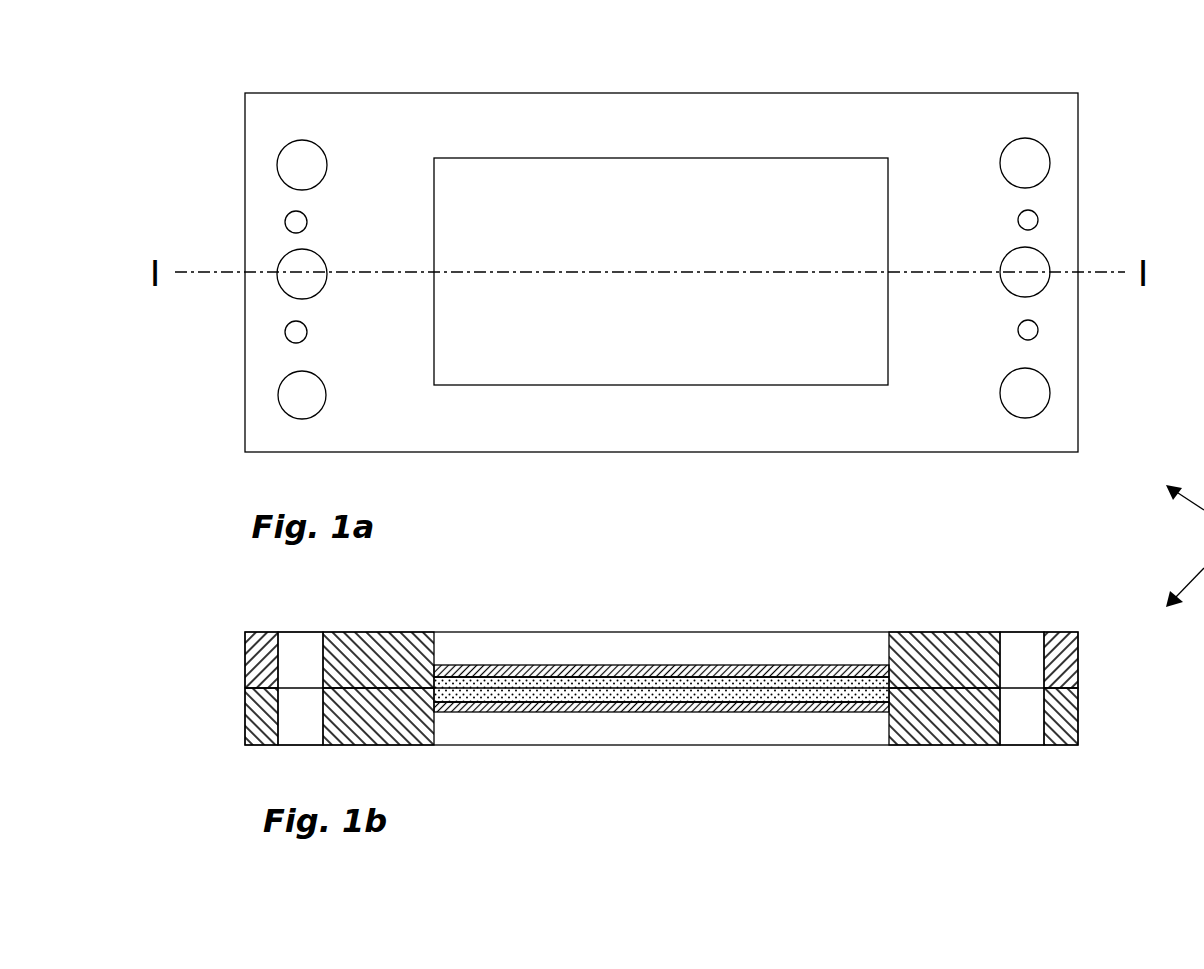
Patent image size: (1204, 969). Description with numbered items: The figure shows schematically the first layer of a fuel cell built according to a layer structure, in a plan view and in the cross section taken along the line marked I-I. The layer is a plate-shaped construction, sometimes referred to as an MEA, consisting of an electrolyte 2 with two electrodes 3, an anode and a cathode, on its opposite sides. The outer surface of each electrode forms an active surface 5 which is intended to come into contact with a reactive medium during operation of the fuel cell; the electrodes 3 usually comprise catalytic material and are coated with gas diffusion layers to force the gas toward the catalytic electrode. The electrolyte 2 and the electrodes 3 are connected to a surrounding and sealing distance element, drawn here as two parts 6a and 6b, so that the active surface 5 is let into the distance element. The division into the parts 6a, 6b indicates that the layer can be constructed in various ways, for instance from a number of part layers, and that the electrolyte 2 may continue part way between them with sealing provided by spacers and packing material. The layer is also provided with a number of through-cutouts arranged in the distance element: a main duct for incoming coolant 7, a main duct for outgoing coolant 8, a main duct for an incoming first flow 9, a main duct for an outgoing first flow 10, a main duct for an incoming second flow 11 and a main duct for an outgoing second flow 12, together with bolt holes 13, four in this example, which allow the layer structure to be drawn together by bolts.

In FIG. 1B, the electrolyte 2 is at (779, 688).
In FIG. 1B, the electrodes 3 is at (635, 678).
In FIG. 1A, the active surface 5 is at (543, 182).
In FIG. 1B, the active surface 5 is at (513, 665).
In FIG. 1B, the distance element part 6a is at (376, 645).
In FIG. 1B, the distance element part 6b is at (963, 745).
In FIG. 1A, the main duct for incoming coolant 7 is at (1033, 158).
In FIG. 1A, the main duct for outgoing coolant 8 is at (290, 395).
In FIG. 1A, the main duct for an incoming first flow 9 is at (1032, 268).
In FIG. 1B, the main duct for an incoming first flow 9 is at (1022, 643).
In FIG. 1A, the main duct for an outgoing first flow 10 is at (300, 278).
In FIG. 1B, the main duct for an outgoing first flow 10 is at (290, 712).
In FIG. 1A, the main duct for an incoming second flow 11 is at (1033, 393).
In FIG. 1A, the main duct for an outgoing second flow 12 is at (300, 157).
In FIG. 1A, the bolt holes 13 is at (1035, 212).